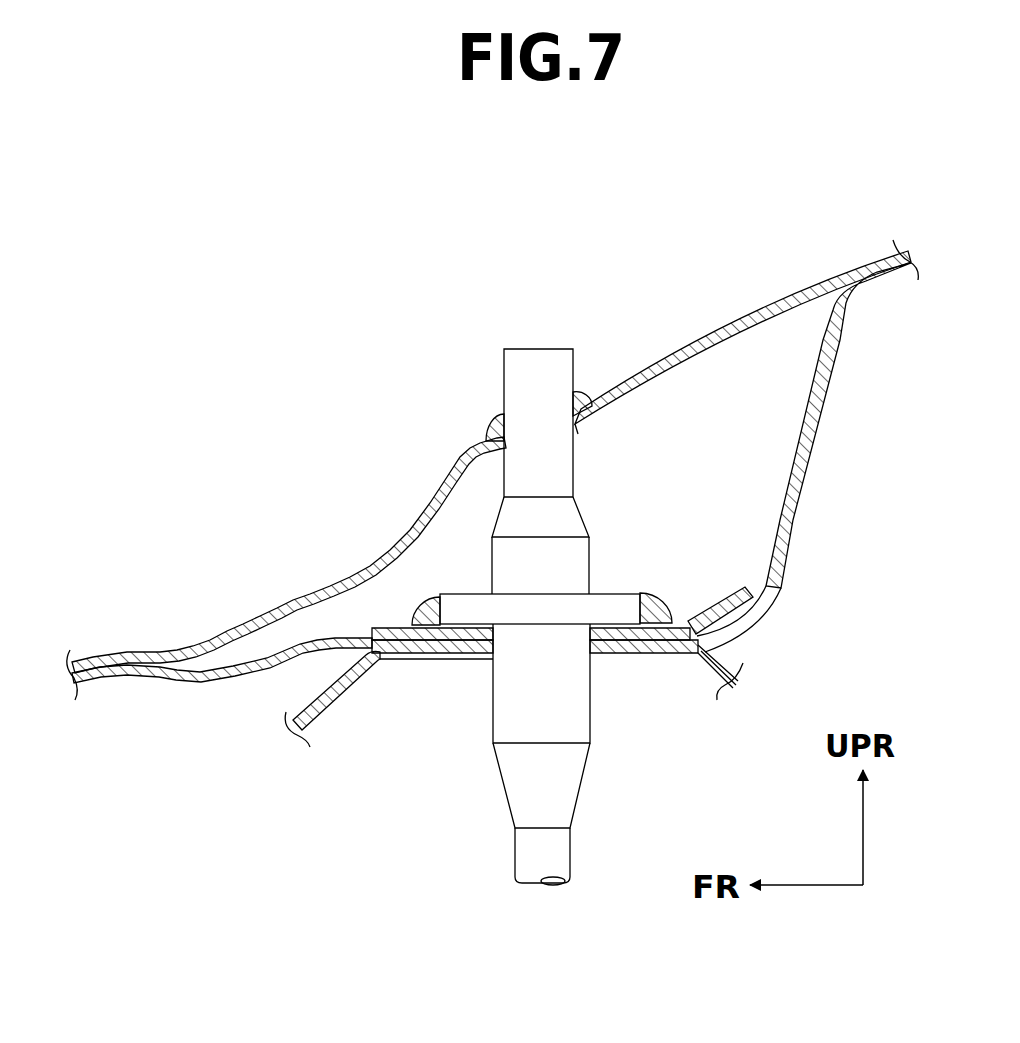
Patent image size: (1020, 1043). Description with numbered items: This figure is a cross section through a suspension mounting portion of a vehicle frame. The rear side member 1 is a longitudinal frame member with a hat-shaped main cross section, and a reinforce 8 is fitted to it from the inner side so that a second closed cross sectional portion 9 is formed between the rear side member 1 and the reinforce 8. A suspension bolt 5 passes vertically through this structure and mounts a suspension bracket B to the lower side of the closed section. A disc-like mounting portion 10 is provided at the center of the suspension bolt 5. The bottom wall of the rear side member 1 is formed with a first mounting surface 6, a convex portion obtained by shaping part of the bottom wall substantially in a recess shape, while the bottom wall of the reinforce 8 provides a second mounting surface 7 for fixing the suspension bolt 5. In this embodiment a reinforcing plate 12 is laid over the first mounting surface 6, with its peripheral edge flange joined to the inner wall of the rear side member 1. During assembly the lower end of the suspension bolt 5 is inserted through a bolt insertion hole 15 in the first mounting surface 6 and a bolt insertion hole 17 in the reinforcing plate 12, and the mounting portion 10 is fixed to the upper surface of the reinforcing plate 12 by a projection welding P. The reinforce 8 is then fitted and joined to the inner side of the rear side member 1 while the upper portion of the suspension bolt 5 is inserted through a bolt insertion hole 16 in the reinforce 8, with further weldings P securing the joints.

The rear side member 1 is at (814, 491).
The suspension bolt 5 is at (592, 710).
The first mounting surface 6 is at (352, 628).
The second mounting surface 7 is at (486, 442).
The reinforce 8 is at (777, 294).
The second closed cross sectional portion 9 is at (711, 440).
The mounting portion 10 is at (616, 597).
The reinforcing plate 12 is at (712, 613).
The bolt insertion hole 15 is at (535, 696).
The bolt insertion hole 17 is at (480, 668).
The bolt insertion hole 16 is at (584, 440).
The suspension bracket B is at (712, 654).
The welding P is at (494, 431).